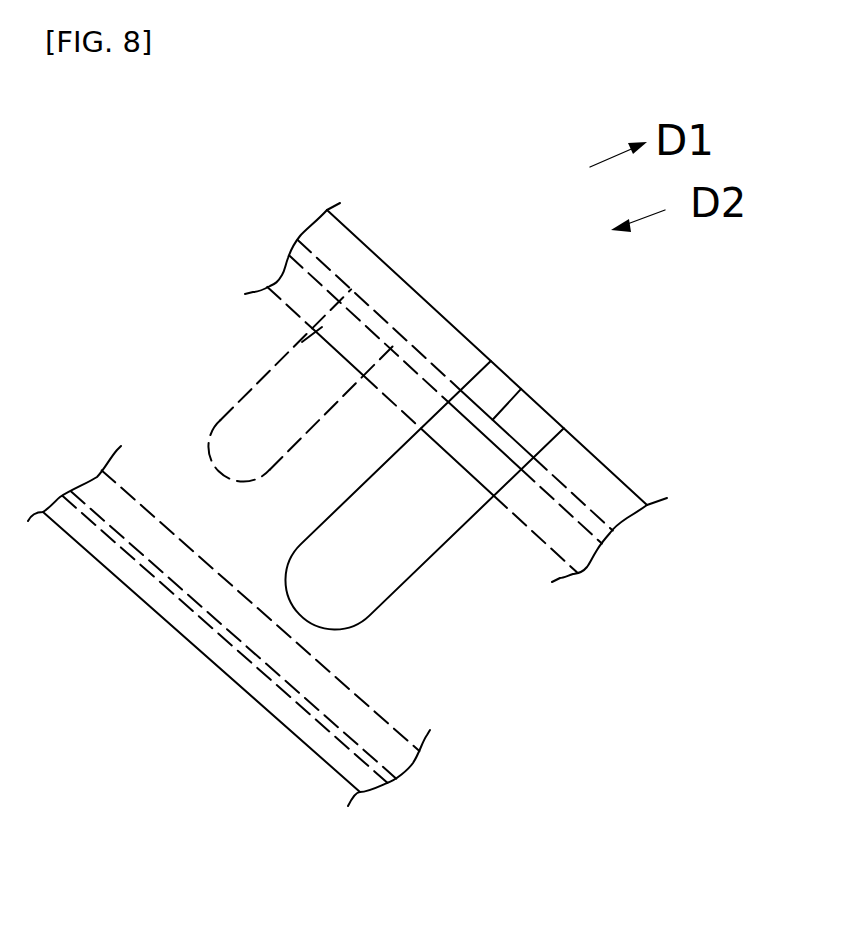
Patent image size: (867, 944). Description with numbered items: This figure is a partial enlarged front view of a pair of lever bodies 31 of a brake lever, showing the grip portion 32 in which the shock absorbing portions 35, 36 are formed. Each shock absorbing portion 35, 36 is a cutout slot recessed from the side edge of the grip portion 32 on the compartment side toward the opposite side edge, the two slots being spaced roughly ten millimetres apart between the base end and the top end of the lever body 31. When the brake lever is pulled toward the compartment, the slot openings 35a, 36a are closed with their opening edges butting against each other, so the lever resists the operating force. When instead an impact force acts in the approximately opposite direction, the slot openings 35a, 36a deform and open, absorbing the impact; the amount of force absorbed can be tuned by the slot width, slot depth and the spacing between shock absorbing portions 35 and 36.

The lever body 31 is at (576, 437).
The grip portion 32 is at (573, 497).
The shock absorbing portion 35 is at (243, 404).
The slot opening 35a is at (372, 340).
The shock absorbing portion 36 is at (410, 578).
The slot opening 36a is at (521, 391).